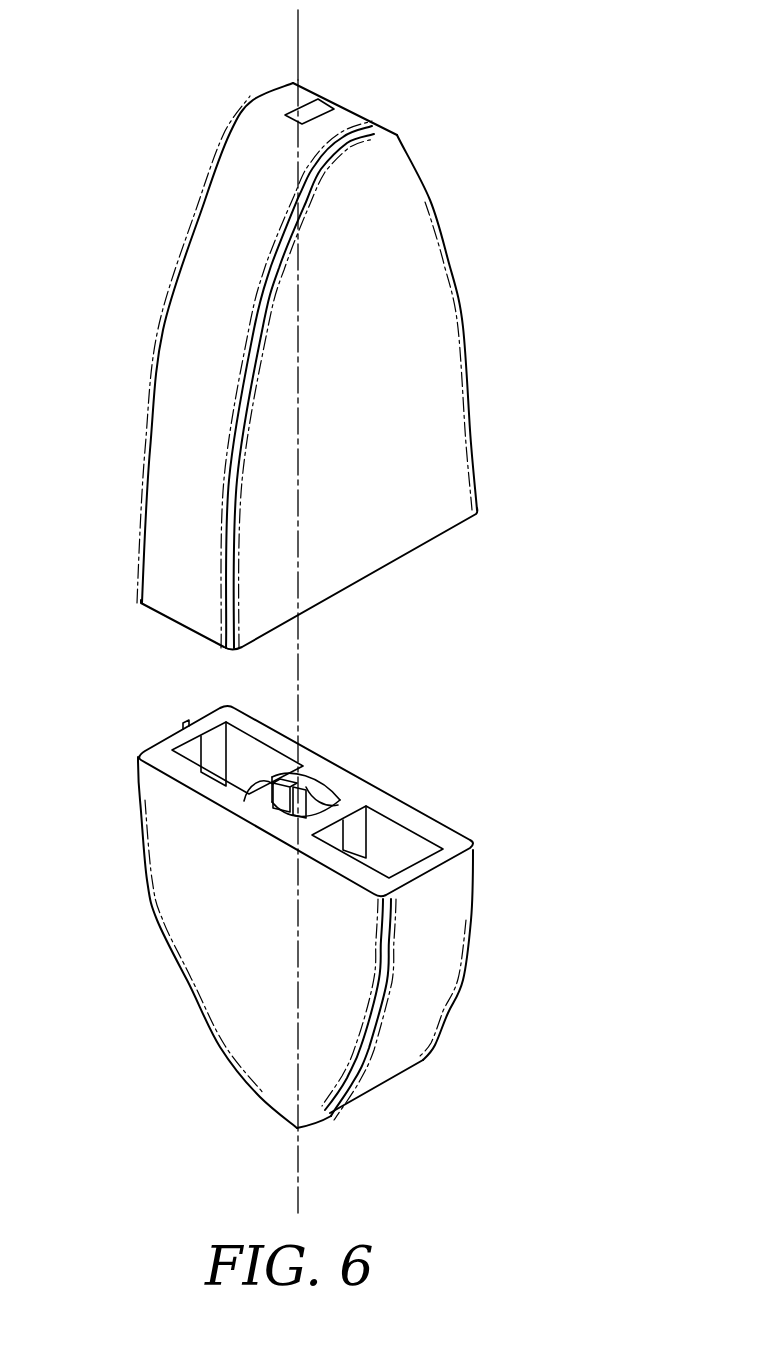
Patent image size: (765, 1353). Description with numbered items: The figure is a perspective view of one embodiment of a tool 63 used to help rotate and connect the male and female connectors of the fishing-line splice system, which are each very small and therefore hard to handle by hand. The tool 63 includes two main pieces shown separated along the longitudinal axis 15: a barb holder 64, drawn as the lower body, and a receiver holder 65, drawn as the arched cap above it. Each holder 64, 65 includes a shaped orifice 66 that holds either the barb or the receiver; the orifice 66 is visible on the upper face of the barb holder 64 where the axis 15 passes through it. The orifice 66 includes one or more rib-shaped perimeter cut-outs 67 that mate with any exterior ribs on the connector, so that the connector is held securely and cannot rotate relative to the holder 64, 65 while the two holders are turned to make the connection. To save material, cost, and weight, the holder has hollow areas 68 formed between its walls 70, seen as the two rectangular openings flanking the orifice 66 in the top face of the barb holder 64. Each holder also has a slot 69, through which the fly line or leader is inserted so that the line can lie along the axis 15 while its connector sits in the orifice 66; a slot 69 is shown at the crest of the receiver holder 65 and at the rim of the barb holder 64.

The longitudinal axis 15 is at (299, 28).
The tool 63 is at (332, 605).
The barb holder 64 is at (332, 892).
The receiver holder 65 is at (486, 260).
The shaped orifice 66 is at (308, 787).
The rib-shaped perimeter cut-outs 67 is at (340, 803).
The hollow areas 68 is at (250, 745).
The slot 69 is at (315, 110).
The walls 70 is at (140, 762).